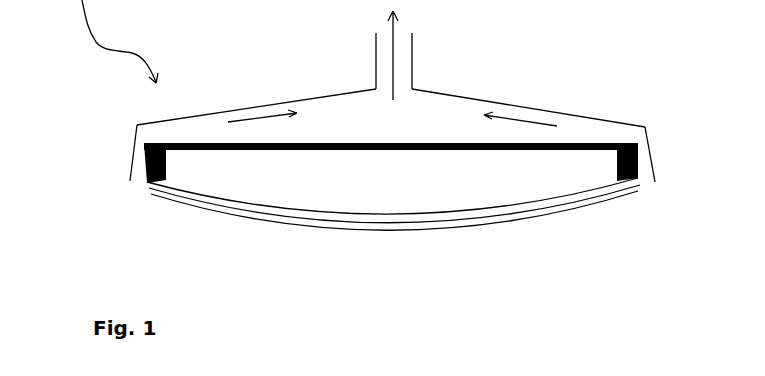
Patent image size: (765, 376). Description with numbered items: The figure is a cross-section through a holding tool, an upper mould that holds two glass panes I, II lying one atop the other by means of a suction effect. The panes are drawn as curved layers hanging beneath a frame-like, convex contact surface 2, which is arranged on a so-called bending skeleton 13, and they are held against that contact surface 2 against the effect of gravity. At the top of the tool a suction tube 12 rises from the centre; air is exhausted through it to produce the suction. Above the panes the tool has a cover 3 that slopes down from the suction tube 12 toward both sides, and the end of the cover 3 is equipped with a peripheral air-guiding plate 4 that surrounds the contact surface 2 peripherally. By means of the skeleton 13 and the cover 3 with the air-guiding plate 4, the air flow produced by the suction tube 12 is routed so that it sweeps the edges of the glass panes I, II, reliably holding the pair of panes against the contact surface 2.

The contact surface 2 is at (147, 177).
The cover 3 is at (235, 105).
The air-guiding plate 4 is at (133, 150).
The suction tube 12 is at (378, 50).
The skeleton 13 is at (576, 143).
The glass pane I is at (210, 210).
The glass pane II is at (228, 216).